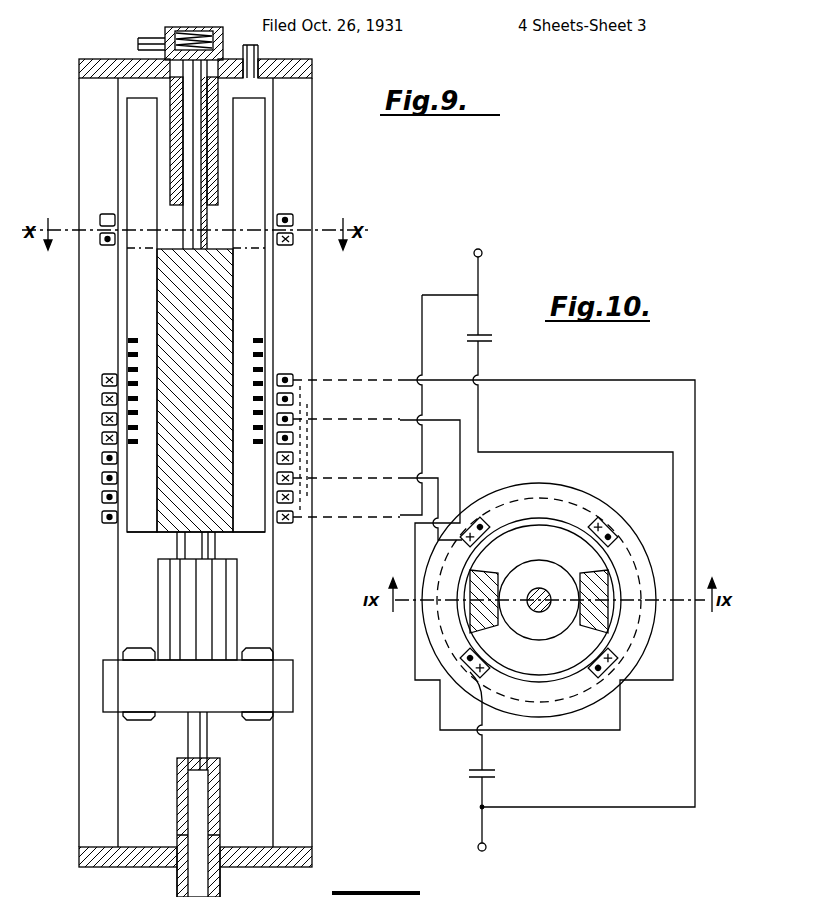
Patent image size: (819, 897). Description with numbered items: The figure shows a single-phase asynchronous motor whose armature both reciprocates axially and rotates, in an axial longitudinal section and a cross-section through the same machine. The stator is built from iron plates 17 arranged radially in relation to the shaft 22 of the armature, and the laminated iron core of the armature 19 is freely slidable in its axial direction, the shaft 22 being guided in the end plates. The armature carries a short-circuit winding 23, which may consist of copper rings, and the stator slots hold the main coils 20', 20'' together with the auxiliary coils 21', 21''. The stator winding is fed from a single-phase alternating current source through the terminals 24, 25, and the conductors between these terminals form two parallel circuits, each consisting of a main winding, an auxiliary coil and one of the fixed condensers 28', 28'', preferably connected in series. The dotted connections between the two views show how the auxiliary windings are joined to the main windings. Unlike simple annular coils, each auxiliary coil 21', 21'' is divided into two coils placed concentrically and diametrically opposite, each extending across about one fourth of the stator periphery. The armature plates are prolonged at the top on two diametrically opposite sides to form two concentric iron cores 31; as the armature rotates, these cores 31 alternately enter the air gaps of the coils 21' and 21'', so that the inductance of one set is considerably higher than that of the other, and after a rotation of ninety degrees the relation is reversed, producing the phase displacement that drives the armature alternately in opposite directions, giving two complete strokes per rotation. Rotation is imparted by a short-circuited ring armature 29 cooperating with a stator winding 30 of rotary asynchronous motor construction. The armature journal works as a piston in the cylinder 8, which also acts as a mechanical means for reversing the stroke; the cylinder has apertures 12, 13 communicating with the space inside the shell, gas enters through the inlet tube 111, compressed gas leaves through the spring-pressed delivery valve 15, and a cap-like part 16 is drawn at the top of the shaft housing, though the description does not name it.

In FIG. 9, the cylinder 8 is at (221, 888).
In FIG. 9, the aperture or slot 12 is at (172, 190).
In FIG. 9, the aperture or slot 13 is at (222, 840).
In FIG. 9, the spring-pressed delivery valve 15 is at (162, 59).
In FIG. 9, the cap 16 is at (150, 37).
In FIG. 9, the iron plates of the stator 17 is at (105, 300).
In FIG. 10, the iron plates of the stator 17 is at (640, 546).
In FIG. 9, the armature 19 is at (160, 515).
In FIG. 10, the armature 19 is at (545, 592).
In FIG. 9, the main coil 20' is at (211, 443).
In FIG. 9, the main coil 20'' is at (211, 463).
In FIG. 9, the auxiliary coil 21' is at (191, 219).
In FIG. 10, the auxiliary coil 21' is at (522, 597).
In FIG. 10, the auxiliary coil 21'' is at (572, 611).
In FIG. 9, the shaft 22 is at (205, 120).
In FIG. 10, the shaft 22 is at (527, 606).
In FIG. 9, the short-circuit winding 23 is at (130, 352).
In FIG. 10, the terminal 24 is at (478, 847).
In FIG. 10, the terminal 25 is at (474, 254).
In FIG. 10, the fixed condenser 28' is at (547, 551).
In FIG. 10, the fixed condenser 28'' is at (466, 757).
In FIG. 9, the short-circuited ring armature 29 is at (172, 580).
In FIG. 9, the stator winding 30 is at (120, 680).
In FIG. 9, the iron core 31 is at (130, 118).
In FIG. 10, the iron core 31 is at (602, 622).
In FIG. 9, the inlet tube 111 is at (259, 50).